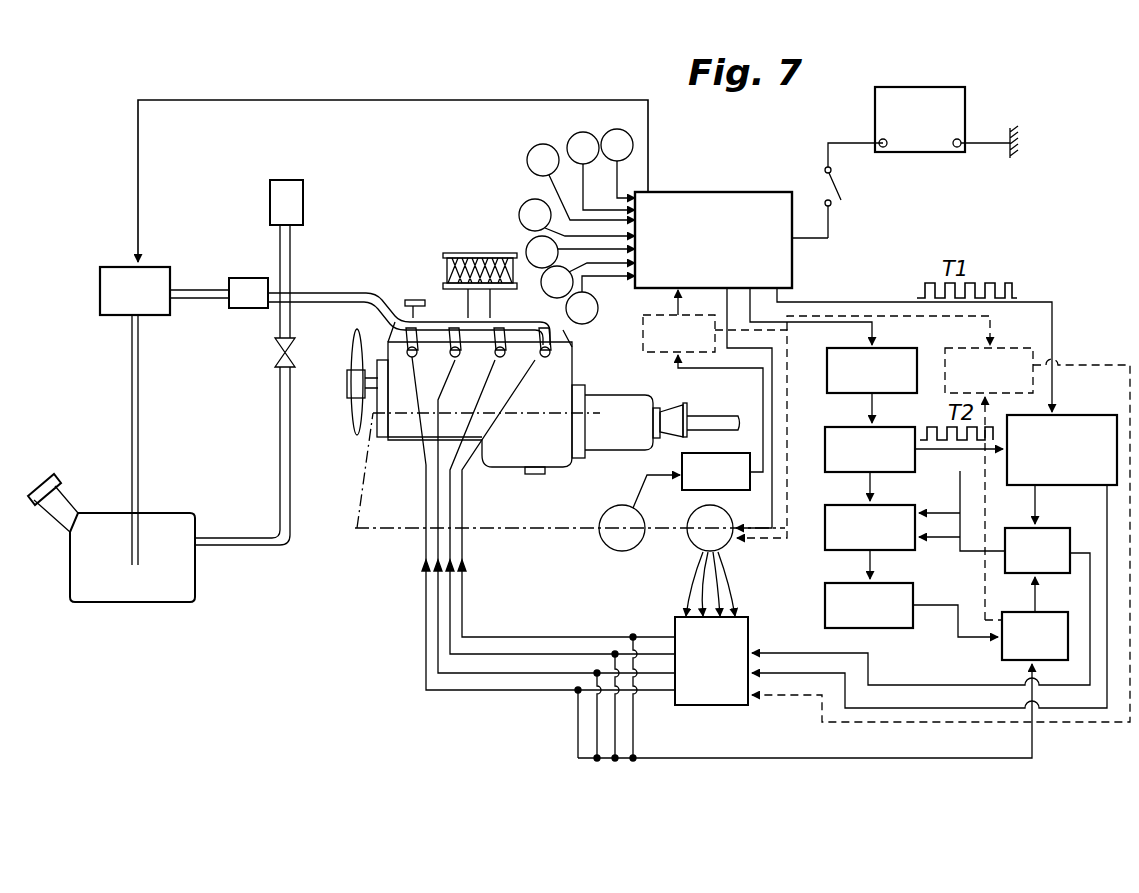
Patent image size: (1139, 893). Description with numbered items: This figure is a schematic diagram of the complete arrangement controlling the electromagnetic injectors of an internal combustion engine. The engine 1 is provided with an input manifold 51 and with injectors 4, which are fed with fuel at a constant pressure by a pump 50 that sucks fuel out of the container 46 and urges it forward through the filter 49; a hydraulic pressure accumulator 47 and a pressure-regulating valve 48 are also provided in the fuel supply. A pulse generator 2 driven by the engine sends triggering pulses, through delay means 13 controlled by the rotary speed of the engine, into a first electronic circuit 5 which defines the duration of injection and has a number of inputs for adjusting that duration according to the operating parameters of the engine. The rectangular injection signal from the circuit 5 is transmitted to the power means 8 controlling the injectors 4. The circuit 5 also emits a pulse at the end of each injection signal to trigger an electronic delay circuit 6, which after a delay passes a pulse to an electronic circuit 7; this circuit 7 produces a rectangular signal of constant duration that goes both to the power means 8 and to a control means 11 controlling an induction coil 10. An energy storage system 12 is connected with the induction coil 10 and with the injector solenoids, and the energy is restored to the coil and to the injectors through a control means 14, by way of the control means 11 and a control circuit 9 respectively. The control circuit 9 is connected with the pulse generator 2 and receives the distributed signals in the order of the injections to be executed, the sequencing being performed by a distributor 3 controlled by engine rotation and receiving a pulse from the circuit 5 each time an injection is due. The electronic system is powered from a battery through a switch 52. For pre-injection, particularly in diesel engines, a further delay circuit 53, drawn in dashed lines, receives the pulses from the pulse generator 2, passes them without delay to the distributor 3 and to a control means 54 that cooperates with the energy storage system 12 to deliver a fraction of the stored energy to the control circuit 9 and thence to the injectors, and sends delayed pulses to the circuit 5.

The engine 1 is at (562, 395).
The pulse generator 2 is at (612, 546).
The distributor 3 is at (731, 542).
The injectors 4 is at (546, 376).
The first electronic circuit 5 is at (722, 196).
The electronic delay circuit 6 is at (830, 378).
The electronic circuit 7 is at (832, 455).
The power means 8 is at (1082, 425).
The control circuit 9 is at (712, 706).
The induction coil 10 is at (835, 605).
The control means 11 is at (840, 528).
The energy storage system 12 is at (1018, 624).
The delay means 13 is at (692, 487).
The control means 14 is at (1066, 546).
The container 46 is at (183, 514).
The hydraulic pressure accumulator 47 is at (270, 192).
The pressure-regulating valve 48 is at (274, 356).
The filter 49 is at (242, 278).
The pump 50 is at (160, 268).
The input manifold 51 is at (445, 305).
The switch 52 is at (842, 198).
The further delay circuit 53 is at (643, 328).
The control means 54 is at (1020, 362).